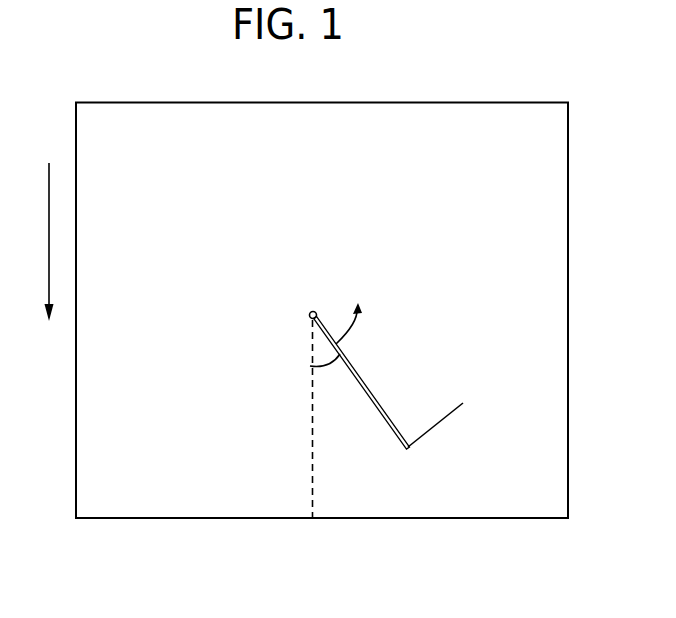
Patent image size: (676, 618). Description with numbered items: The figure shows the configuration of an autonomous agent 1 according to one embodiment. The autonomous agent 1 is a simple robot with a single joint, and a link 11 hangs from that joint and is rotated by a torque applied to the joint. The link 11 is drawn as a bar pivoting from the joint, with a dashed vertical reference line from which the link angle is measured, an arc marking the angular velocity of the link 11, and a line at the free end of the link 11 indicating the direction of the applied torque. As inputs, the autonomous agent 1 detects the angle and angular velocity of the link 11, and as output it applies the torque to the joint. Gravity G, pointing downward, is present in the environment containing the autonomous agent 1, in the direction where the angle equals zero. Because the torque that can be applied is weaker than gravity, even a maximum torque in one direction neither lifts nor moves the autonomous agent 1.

The autonomous agent 1 is at (207, 519).
The link 11 is at (375, 396).
The gravity direction G is at (34, 242).